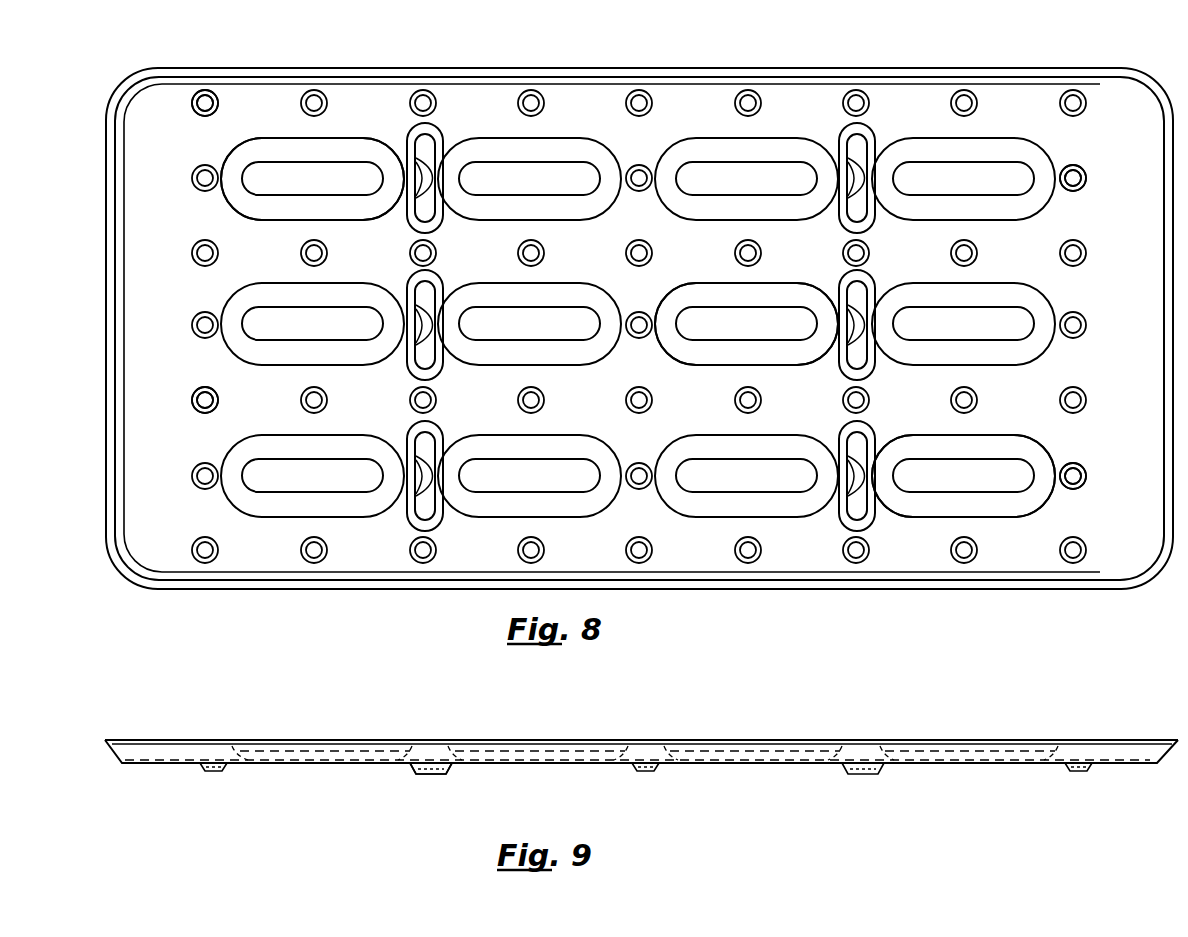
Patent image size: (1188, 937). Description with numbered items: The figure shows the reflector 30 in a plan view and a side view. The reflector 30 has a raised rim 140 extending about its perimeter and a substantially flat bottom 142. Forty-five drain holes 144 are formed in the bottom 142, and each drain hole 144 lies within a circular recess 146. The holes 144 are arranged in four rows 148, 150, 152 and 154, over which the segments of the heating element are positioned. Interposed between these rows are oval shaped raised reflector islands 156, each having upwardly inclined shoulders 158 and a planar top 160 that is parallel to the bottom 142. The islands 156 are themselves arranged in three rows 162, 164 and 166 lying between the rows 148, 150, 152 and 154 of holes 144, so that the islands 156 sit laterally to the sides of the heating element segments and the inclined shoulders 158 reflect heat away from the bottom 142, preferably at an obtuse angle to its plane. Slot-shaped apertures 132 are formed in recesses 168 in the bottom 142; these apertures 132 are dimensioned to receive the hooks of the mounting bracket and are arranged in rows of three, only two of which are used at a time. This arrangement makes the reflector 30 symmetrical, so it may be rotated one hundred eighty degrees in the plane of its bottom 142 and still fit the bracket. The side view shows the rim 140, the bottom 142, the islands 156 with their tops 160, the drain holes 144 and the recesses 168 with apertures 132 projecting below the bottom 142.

In FIG. 8, the reflector 30 is at (813, 60).
In FIG. 9, the reflector 30 is at (621, 702).
In FIG. 8, the raised rim 140 is at (638, 69).
In FIG. 9, the raised rim 140 is at (112, 752).
In FIG. 8, the bottom 142 is at (255, 105).
In FIG. 9, the bottom 142 is at (142, 765).
In FIG. 8, the drain holes 144 is at (230, 97).
In FIG. 9, the drain holes 144 is at (215, 772).
In FIG. 8, the circular recess 146 is at (205, 90).
In FIG. 8, the row 148 is at (184, 101).
In FIG. 8, the row 150 is at (184, 254).
In FIG. 8, the row 152 is at (184, 401).
In FIG. 8, the row 154 is at (184, 550).
In FIG. 8, the reflector islands 156 is at (229, 148).
In FIG. 9, the reflector islands 156 is at (237, 748).
In FIG. 8, the inclined shoulders 158 is at (268, 150).
In FIG. 8, the planar tops 160 is at (327, 183).
In FIG. 9, the planar tops 160 is at (300, 752).
In FIG. 8, the row 162 is at (184, 179).
In FIG. 8, the row 164 is at (184, 325).
In FIG. 8, the row 166 is at (184, 476).
In FIG. 8, the recesses 168 is at (443, 142).
In FIG. 9, the recesses 168 is at (412, 767).
In FIG. 8, the slot-shaped apertures 132 is at (433, 192).
In FIG. 9, the slot-shaped apertures 132 is at (432, 775).